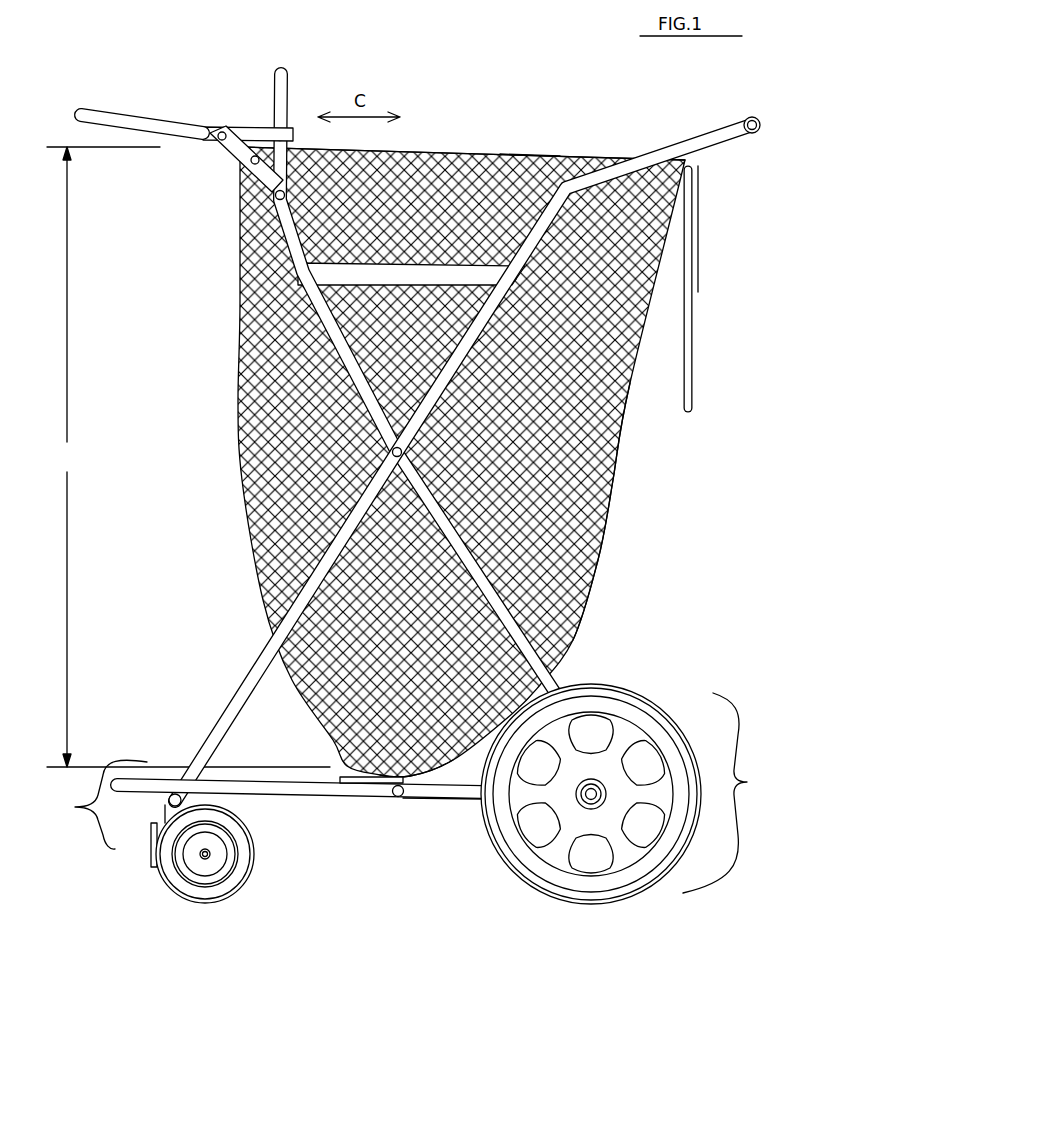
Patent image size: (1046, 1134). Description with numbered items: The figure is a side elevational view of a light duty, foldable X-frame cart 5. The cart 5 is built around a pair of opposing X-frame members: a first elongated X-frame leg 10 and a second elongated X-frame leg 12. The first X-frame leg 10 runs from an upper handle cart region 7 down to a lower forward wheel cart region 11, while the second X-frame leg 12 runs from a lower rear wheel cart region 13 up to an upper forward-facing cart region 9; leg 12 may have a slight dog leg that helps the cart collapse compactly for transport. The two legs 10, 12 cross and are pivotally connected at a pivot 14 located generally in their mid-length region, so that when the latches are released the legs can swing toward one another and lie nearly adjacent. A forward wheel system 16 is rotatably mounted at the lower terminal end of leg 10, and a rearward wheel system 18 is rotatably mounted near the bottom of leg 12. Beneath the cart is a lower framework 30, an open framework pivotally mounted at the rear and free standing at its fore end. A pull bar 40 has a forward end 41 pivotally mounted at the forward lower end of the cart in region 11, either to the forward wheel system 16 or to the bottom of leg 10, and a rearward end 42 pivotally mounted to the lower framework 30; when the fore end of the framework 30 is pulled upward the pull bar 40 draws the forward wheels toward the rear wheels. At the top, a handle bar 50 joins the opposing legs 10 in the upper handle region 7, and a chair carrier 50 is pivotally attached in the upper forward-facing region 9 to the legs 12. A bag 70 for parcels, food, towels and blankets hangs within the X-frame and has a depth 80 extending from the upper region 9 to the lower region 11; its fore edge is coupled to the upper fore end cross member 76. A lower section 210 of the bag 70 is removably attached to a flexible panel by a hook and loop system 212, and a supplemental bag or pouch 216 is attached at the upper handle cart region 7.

The X-frame cart 5 is at (543, 146).
The upper handle cart region 7 is at (668, 152).
The upper forward-facing cart region 9 is at (238, 128).
The first elongated X-frame leg 10 is at (473, 460).
The lower forward wheel cart region 11 is at (94, 804).
The second elongated X-frame leg 12 is at (323, 357).
The lower rear wheel cart region 13 is at (730, 793).
The pivot 14 is at (383, 443).
The forward wheel system 16 is at (222, 905).
The rearward wheel system 18 is at (623, 693).
The lower framework 30 is at (446, 810).
The pull bar 40 is at (300, 799).
The forward end of pull bar 41 is at (162, 800).
The rearward end of pull bar 42 is at (402, 801).
The handle bar 50 is at (150, 114).
The bag 70 is at (618, 560).
The longitudinal side edge of bag 76 is at (437, 150).
The depth of bag 80 is at (188, 457).
The lower section of bag 210 is at (436, 758).
The hook and loop system 212 is at (378, 780).
The supplemental bag or pouch 216 is at (698, 245).